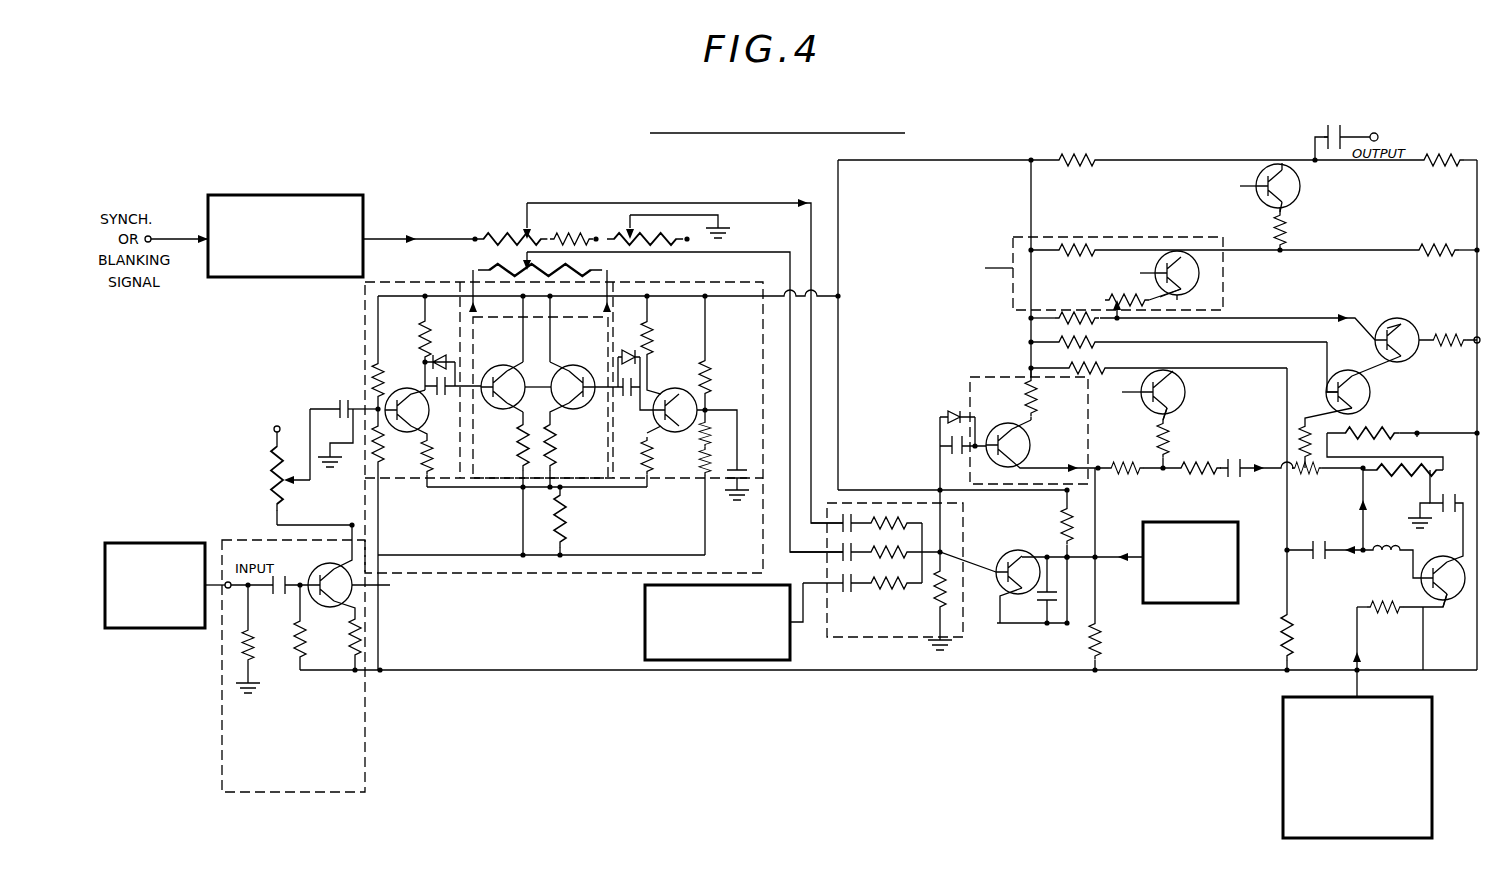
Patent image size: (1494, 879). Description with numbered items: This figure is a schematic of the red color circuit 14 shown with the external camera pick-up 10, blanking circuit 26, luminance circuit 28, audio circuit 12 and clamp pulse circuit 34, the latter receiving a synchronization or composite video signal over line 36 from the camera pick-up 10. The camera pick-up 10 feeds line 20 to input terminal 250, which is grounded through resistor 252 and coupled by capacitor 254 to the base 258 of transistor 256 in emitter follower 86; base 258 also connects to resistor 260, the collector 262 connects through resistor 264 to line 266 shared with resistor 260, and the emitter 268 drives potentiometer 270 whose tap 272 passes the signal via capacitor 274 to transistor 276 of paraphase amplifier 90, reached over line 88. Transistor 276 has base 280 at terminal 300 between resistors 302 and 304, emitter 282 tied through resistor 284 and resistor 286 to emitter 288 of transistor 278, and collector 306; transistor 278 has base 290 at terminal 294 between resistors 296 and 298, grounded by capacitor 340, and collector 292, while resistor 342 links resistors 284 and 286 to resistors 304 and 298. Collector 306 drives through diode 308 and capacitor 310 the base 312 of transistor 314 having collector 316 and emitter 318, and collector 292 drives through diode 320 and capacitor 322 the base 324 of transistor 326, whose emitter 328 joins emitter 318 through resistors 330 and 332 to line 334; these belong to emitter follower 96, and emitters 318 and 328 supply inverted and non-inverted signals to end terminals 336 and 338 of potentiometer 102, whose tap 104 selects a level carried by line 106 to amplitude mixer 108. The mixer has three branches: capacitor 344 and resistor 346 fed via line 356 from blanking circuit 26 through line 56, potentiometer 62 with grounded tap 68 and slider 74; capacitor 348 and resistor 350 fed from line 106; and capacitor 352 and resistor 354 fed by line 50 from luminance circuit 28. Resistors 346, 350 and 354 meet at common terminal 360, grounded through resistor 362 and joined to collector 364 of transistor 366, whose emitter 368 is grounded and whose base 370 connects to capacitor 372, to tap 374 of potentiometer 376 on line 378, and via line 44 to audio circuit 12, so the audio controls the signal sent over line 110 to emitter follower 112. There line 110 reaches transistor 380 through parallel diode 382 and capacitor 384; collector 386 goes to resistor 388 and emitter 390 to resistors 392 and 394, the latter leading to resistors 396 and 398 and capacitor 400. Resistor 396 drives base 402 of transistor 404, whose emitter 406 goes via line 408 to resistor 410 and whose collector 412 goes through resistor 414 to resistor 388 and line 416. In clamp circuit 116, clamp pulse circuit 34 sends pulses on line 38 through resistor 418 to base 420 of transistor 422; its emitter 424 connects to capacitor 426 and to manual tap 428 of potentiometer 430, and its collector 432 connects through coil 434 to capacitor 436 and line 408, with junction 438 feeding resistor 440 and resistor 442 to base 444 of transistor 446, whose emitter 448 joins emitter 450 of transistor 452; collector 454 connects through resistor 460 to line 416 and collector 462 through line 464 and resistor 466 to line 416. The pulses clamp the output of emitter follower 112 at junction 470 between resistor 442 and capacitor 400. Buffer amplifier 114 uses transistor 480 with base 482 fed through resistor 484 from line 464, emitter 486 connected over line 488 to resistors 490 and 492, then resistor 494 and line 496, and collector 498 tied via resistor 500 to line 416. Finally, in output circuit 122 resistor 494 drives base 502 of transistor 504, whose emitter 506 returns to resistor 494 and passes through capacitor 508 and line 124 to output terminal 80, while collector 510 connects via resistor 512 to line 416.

The camera pickup 10 is at (153, 540).
The audio circuit 12 is at (1190, 562).
The red color circuit 14 is at (635, 341).
The camera output line 20 is at (215, 605).
The blanking circuit 26 is at (285, 236).
The luminance circuit 28 is at (717, 622).
The clamp pulse circuit 34 is at (1357, 767).
The synch or blanking signal input 36 is at (176, 232).
The clamp pulse line 38 is at (1355, 631).
The audio input line 44 is at (1107, 557).
The luminance output line 50 is at (808, 622).
The blanking output line 56 is at (385, 231).
The potentiometer 62 is at (574, 224).
The potentiometer 68 is at (668, 224).
The potentiometer 74 is at (525, 233).
The output terminal 80 is at (1375, 133).
The emitter follower 86 is at (293, 666).
The ground line 88 is at (380, 652).
The paraphase amplifier 90 is at (690, 516).
The emitter follower 96 is at (564, 416).
The bias supply 102 is at (543, 285).
The potentiometer 104 is at (645, 397).
The blanking line 106 is at (769, 250).
The amplifier mixer 108 is at (895, 570).
The line 110 is at (945, 508).
The emitter follower 112 is at (979, 399).
The buffer amplifier 114 is at (1118, 254).
The clamp circuit 116 is at (1358, 545).
The output circuit 122 is at (1308, 395).
The output capacitor 124 is at (1343, 120).
The input terminal 250 is at (222, 577).
The ground 252 is at (265, 682).
The capacitor 254 is at (281, 600).
The resistor 256 is at (319, 627).
The transistor 258 is at (316, 564).
The resistor 260 is at (269, 634).
The emitter lead 262 is at (358, 594).
The resistor 264 is at (330, 657).
The ground line 266 is at (385, 672).
The output line 268 is at (390, 582).
The potentiometer wiper 270 is at (278, 500).
The potentiometer 272 is at (299, 475).
The capacitor 274 is at (338, 398).
The resistor 276 is at (402, 438).
The resistor 278 is at (650, 343).
The transistor 280 is at (407, 395).
The resistor 282 is at (442, 456).
The emitter line 284 is at (537, 454).
The resistor 286 is at (636, 462).
The emitter lead 288 is at (640, 437).
The transistor 290 is at (678, 420).
The base lead 292 is at (664, 382).
The resistor 294 is at (709, 412).
The resistor 296 is at (710, 357).
The resistor 298 is at (690, 501).
The base line 300 is at (335, 400).
The resistor 302 is at (370, 365).
The ground connection 304 is at (357, 442).
The resistor 306 is at (408, 341).
The diode 308 is at (447, 346).
The capacitor 310 is at (440, 393).
The transistor 312 is at (497, 373).
The connection 314 is at (538, 373).
The collector lead 316 is at (499, 332).
The emitter lead 318 is at (534, 399).
The diode 320 is at (623, 347).
The capacitor 322 is at (639, 400).
The transistor 324 is at (581, 373).
The collector lead 326 is at (566, 332).
The emitter lead 328 is at (565, 427).
The resistor 330 is at (508, 483).
The resistor 332 is at (572, 453).
The line 334 is at (518, 558).
The negative supply terminal 336 is at (473, 271).
The positive supply terminal 338 is at (607, 271).
The capacitor 340 is at (727, 479).
The resistor 342 is at (565, 550).
The input line 344 is at (854, 517).
The capacitor and resistor 346 is at (882, 514).
The input line 348 is at (815, 543).
The capacitor and resistor 350 is at (882, 544).
The input line 352 is at (813, 583).
The capacitor and resistor 354 is at (882, 575).
The supply line 356 is at (868, 297).
The base line 360 is at (962, 553).
The resistor 362 is at (947, 615).
The transistor 364 is at (1020, 550).
The resistor 366 is at (1065, 516).
The emitter lead 368 is at (1021, 606).
The line 370 is at (1033, 631).
The capacitor 372 is at (1060, 607).
The line 374 is at (1075, 500).
The line 376 is at (1067, 503).
The supply line 378 is at (838, 384).
The base line 380 is at (1000, 414).
The diode 382 is at (957, 408).
The capacitor 384 is at (942, 437).
The collector lead 386 is at (1023, 427).
The resistor 388 is at (1037, 405).
The transistor 390 is at (1025, 445).
The resistor 392 is at (1105, 652).
The resistor 394 is at (1081, 453).
The resistor 396 is at (1175, 447).
The resistor 398 is at (1185, 483).
The capacitor 400 is at (1236, 477).
The emitter lead 402 is at (1170, 412).
The transistor 404 is at (1155, 376).
The collector lead 406 is at (1175, 378).
The line 408 is at (1263, 489).
The resistor 410 is at (1281, 638).
The base lead 412 is at (1118, 402).
The resistor 414 is at (1157, 358).
The buffer amplifier block 416 is at (976, 266).
The resistor 418 is at (1386, 625).
The emitter lead 420 is at (1450, 601).
The line 422 is at (1444, 638).
The transistor 424 is at (1437, 556).
The capacitor 426 is at (1447, 516).
The resistor 428 is at (1403, 442).
The junction 430 is at (1377, 457).
The emitter line 432 is at (1420, 595).
The ground 434 is at (1417, 530).
The capacitor 436 is at (1325, 567).
The inductor 438 is at (1383, 570).
The resistor 440 is at (1370, 473).
The resistor 442 is at (1300, 435).
The base lead 444 is at (1315, 385).
The collector lead 446 is at (1352, 369).
The transistor 448 is at (1372, 390).
The resistor 450 is at (1449, 355).
The transistor 452 is at (1418, 323).
The line 454 is at (1325, 377).
The resistor 460 is at (1110, 342).
The collector lead 462 is at (1390, 322).
The line 464 is at (1310, 334).
The resistor 466 is at (1088, 316).
The resistor 470 is at (1329, 481).
The potentiometer 480 is at (1150, 287).
The emitter lead 482 is at (1190, 280).
The line 484 is at (1177, 297).
The transistor 486 is at (1198, 273).
The emitter line 488 is at (1255, 230).
The resistor 490 is at (1295, 243).
The resistor 492 is at (1428, 250).
The resistor 494 is at (1448, 158).
The line 496 is at (1477, 195).
The base lead 498 is at (1129, 269).
The resistor 500 is at (1070, 248).
The emitter lead 502 is at (1300, 197).
The transistor 504 is at (1268, 165).
The collector lead 506 is at (1300, 176).
The output line 508 is at (1330, 130).
The base lead 510 is at (1233, 178).
The resistor 512 is at (1086, 155).